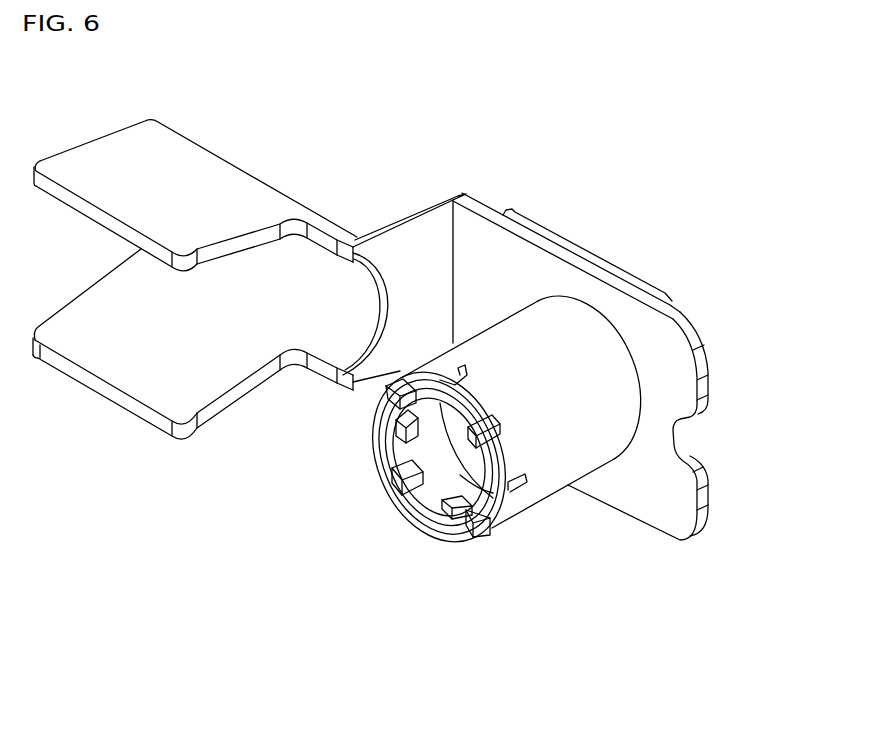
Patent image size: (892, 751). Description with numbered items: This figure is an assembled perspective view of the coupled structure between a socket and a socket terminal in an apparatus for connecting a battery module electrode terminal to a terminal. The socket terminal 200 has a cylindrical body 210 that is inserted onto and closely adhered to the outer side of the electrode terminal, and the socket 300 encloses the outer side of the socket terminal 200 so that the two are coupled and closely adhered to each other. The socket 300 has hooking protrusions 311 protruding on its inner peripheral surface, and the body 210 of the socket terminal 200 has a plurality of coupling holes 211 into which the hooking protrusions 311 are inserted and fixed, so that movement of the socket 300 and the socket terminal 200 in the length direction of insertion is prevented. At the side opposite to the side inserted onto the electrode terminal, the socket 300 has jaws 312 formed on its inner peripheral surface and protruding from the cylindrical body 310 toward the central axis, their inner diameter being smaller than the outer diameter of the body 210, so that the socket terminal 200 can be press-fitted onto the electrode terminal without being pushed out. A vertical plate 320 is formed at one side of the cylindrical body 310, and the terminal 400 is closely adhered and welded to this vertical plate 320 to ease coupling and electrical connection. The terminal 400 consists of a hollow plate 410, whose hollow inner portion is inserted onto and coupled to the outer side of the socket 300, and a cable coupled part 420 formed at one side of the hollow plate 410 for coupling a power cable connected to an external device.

The socket terminal 200 is at (437, 485).
The body 210 is at (487, 520).
The coupling holes 211 is at (388, 408).
The socket 300 is at (482, 380).
The cylindrical body 310 is at (480, 419).
The hooking protrusions 311 is at (408, 437).
The jaws 312 is at (400, 490).
The vertical plate 320 is at (518, 215).
The terminal 400 is at (418, 190).
The hollow plate 410 is at (670, 352).
The cable coupled part 420 is at (200, 155).